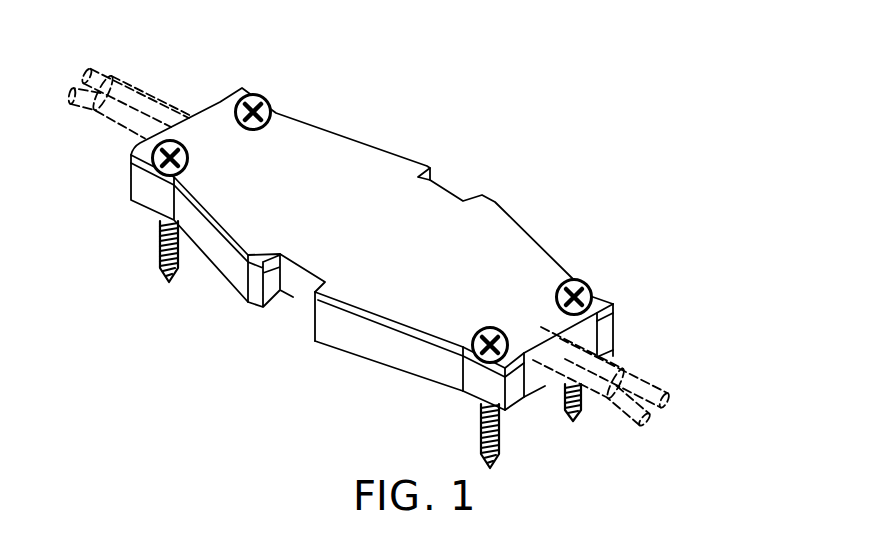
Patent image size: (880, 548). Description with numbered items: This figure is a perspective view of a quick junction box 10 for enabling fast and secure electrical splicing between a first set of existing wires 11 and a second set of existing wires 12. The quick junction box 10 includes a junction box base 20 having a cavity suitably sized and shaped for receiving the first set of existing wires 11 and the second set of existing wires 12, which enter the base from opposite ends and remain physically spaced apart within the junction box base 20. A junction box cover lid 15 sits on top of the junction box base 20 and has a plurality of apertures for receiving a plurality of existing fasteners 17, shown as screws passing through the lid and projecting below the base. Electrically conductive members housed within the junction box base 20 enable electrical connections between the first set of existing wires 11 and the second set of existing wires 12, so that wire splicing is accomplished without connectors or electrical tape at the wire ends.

The quick junction box 10 is at (539, 150).
The first set of existing wires 11 is at (133, 112).
The second set of existing wires 12 is at (617, 379).
The junction box cover lid 15 is at (341, 139).
The existing fasteners 17 is at (158, 267).
The junction box base 20 is at (236, 272).